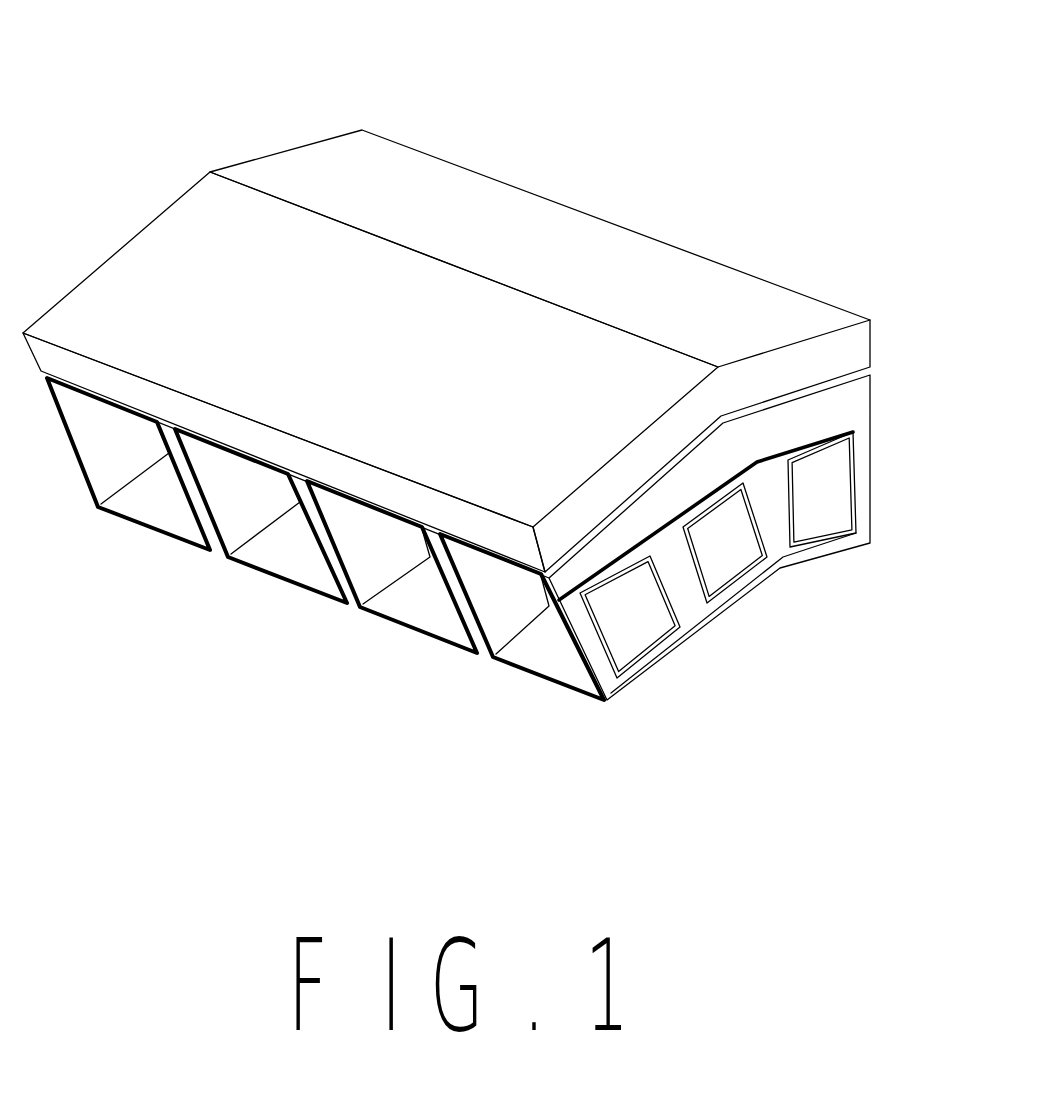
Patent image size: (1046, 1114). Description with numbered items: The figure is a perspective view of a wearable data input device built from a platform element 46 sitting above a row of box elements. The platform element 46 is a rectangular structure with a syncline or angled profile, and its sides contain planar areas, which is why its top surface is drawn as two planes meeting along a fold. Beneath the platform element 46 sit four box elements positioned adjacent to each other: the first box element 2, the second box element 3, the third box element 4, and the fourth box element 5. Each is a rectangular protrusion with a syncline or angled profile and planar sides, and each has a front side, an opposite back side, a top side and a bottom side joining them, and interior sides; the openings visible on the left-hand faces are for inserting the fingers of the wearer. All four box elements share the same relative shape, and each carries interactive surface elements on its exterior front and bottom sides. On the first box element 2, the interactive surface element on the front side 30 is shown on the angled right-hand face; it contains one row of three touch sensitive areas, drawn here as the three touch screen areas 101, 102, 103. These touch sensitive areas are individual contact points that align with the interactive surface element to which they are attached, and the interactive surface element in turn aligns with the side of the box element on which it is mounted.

The first box element 2 is at (458, 583).
The second box element 3 is at (383, 615).
The third box element 4 is at (244, 567).
The fourth box element 5 is at (124, 508).
The interactive surface element on the front side of the first box element 30 is at (706, 356).
The platform element 46 is at (540, 183).
The touch screen area 101 is at (692, 663).
The touch screen area 102 is at (780, 583).
The touch screen area 103 is at (751, 290).